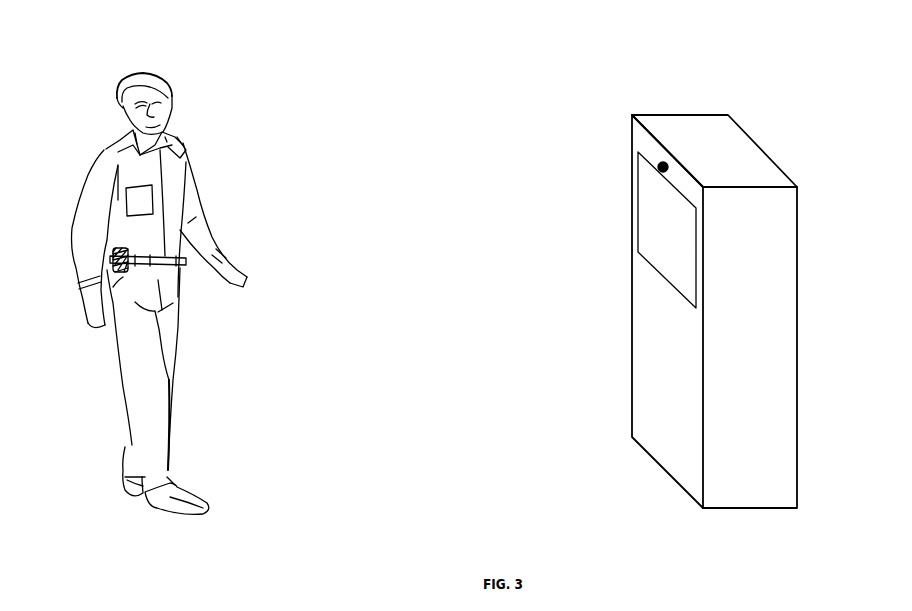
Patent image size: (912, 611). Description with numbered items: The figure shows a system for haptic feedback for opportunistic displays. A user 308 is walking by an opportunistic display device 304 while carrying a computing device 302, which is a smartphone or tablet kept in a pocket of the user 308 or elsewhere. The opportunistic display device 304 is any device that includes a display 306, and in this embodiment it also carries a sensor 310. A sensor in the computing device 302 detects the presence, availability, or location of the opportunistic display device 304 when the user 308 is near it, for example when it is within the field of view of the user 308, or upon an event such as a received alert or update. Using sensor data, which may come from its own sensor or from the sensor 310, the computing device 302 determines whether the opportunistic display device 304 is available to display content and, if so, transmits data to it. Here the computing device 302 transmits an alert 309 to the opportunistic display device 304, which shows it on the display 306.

The computing device 302 is at (112, 256).
The opportunistic display device 304 is at (798, 249).
The display 306 is at (677, 297).
The user 308 is at (110, 90).
The alert 309 is at (651, 236).
The sensor 310 is at (658, 166).